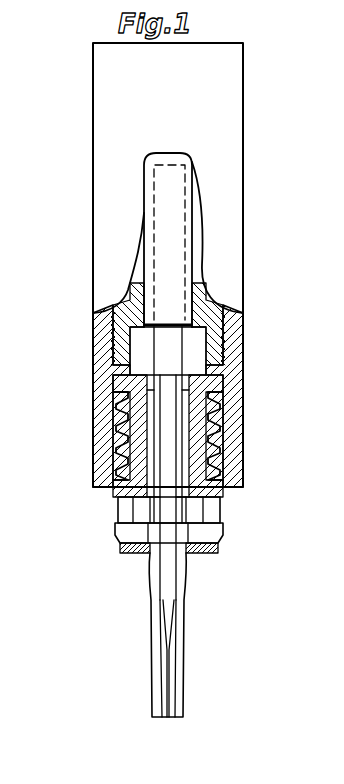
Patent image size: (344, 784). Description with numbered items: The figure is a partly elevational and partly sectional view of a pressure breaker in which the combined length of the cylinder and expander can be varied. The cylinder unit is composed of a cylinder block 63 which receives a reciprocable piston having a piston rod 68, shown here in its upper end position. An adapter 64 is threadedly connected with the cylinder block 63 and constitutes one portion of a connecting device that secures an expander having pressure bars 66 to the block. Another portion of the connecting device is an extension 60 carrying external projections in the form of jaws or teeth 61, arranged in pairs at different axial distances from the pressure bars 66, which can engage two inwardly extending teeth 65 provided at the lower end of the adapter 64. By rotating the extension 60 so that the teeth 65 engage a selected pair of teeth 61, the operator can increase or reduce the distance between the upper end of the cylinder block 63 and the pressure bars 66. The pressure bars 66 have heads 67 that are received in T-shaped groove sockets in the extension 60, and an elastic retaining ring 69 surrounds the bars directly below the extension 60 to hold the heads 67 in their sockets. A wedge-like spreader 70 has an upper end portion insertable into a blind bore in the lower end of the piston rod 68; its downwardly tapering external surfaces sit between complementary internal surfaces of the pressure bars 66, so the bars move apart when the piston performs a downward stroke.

The cylinder block 63 is at (105, 120).
The piston rod 68 is at (158, 222).
The adapter 64 is at (96, 393).
The spreader 70 is at (176, 343).
The teeth 61 is at (222, 400).
The teeth 65 is at (218, 478).
The extension 60 is at (227, 490).
The heads 67 is at (196, 515).
The elastic retaining ring 69 is at (126, 549).
The pressure bars 66 is at (158, 612).